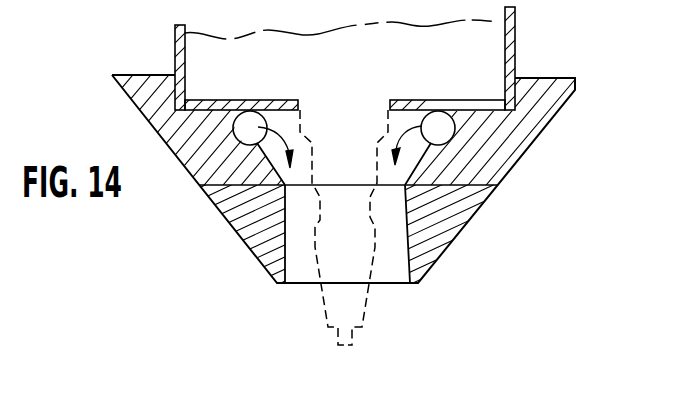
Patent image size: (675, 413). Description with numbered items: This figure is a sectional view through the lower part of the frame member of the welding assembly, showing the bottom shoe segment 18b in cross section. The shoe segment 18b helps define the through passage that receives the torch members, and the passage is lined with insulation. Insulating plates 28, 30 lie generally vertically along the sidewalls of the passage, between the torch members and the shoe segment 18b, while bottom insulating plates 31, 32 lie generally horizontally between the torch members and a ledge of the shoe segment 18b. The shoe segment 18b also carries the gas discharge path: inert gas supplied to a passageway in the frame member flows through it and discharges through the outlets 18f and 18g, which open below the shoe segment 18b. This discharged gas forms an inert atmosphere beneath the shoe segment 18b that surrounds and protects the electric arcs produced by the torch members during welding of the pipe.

The bottom shoe segment 18b is at (482, 212).
The outlet 18f is at (244, 139).
The outlet 18g is at (444, 136).
The insulating plate 28 is at (175, 51).
The insulating plate 30 is at (515, 31).
The bottom insulating plate 31 is at (222, 100).
The bottom insulating plate 32 is at (458, 100).